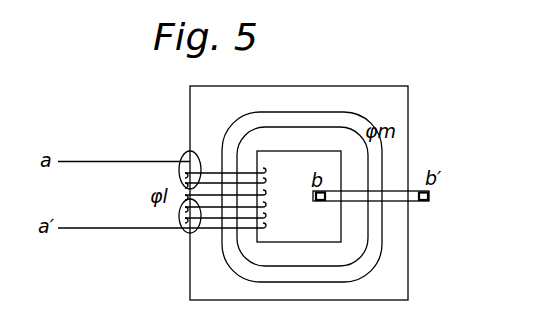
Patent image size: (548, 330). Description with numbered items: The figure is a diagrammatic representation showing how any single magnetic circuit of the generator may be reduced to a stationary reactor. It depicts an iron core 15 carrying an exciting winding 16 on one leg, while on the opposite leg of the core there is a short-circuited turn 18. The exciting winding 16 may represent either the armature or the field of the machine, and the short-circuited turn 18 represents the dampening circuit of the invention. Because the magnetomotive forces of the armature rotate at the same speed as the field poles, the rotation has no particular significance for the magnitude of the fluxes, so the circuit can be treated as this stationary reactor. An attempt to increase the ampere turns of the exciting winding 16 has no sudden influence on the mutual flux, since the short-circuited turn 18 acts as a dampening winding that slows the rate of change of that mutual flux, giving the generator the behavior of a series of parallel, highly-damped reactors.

The iron core 15 is at (395, 254).
The exciting winding 16 is at (206, 232).
The short-circuited turn 18 is at (416, 190).